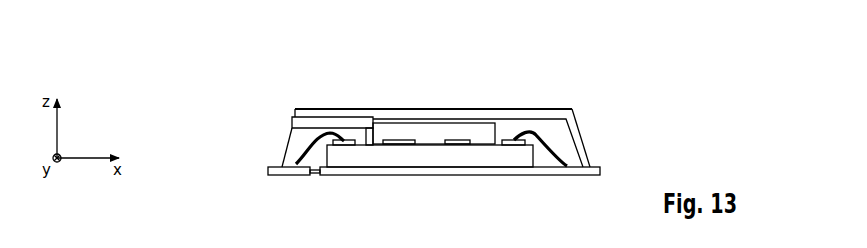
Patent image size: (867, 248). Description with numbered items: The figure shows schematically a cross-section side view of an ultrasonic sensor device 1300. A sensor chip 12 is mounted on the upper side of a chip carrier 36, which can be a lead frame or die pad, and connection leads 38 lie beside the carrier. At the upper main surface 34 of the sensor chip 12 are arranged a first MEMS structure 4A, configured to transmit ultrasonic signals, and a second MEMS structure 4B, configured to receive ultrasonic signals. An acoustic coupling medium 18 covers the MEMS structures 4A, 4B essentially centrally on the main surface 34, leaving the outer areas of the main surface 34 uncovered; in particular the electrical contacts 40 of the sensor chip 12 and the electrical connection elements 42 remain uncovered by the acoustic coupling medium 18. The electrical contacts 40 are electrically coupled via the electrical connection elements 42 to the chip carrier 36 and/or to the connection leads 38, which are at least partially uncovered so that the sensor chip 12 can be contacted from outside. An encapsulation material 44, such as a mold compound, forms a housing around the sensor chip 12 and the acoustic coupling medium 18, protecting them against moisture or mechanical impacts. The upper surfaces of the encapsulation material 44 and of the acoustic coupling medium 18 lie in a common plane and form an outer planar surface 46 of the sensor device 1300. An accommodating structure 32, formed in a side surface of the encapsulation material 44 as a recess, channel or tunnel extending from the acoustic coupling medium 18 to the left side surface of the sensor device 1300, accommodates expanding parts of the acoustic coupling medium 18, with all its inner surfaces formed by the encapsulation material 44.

The sensor device 1300 is at (289, 86).
The sensor chip 12 is at (489, 160).
The acoustic coupling medium 18 is at (370, 148).
The accommodating structure 32 is at (301, 120).
The main surface 34 is at (432, 140).
The chip carrier 36 is at (405, 172).
The connection leads 38 is at (300, 176).
The electrical contacts 40 is at (352, 141).
The electrical connection elements 42 is at (294, 162).
The encapsulation material 44 is at (295, 140).
The outer planar surface 46 is at (453, 106).
The first MEMS structure 4A is at (405, 140).
The second MEMS structure 4B is at (467, 140).